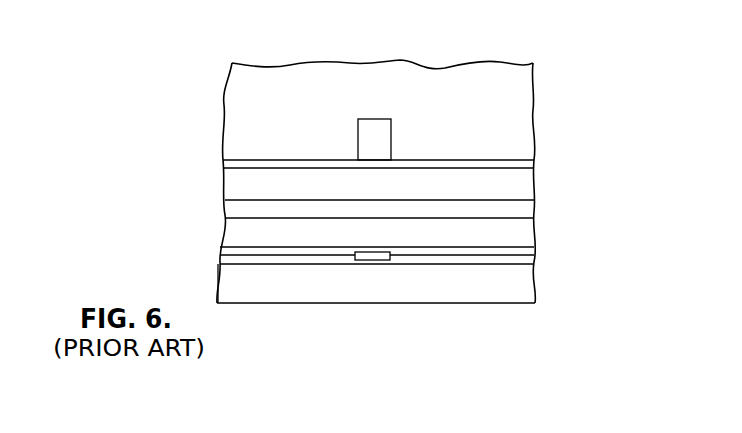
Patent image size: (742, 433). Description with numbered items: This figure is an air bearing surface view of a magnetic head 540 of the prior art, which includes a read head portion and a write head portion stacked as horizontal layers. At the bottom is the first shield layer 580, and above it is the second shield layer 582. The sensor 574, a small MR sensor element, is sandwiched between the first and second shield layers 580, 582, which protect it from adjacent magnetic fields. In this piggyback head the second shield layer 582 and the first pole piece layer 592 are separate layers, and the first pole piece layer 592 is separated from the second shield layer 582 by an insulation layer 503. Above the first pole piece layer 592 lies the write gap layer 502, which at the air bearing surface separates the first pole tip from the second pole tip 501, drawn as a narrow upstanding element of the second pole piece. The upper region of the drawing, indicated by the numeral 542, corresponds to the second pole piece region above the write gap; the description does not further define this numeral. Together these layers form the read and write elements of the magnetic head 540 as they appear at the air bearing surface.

The magnetic head 540 is at (552, 80).
The second pole piece layer P2 542 is at (233, 92).
The write gap layer 502 is at (297, 160).
The second pole tip 501 is at (428, 147).
The first pole piece layer 592 is at (235, 184).
The insulation layer 503 is at (527, 213).
The second shield layer 582 is at (230, 235).
The sensor 574 is at (372, 258).
The first shield layer 580 is at (525, 288).